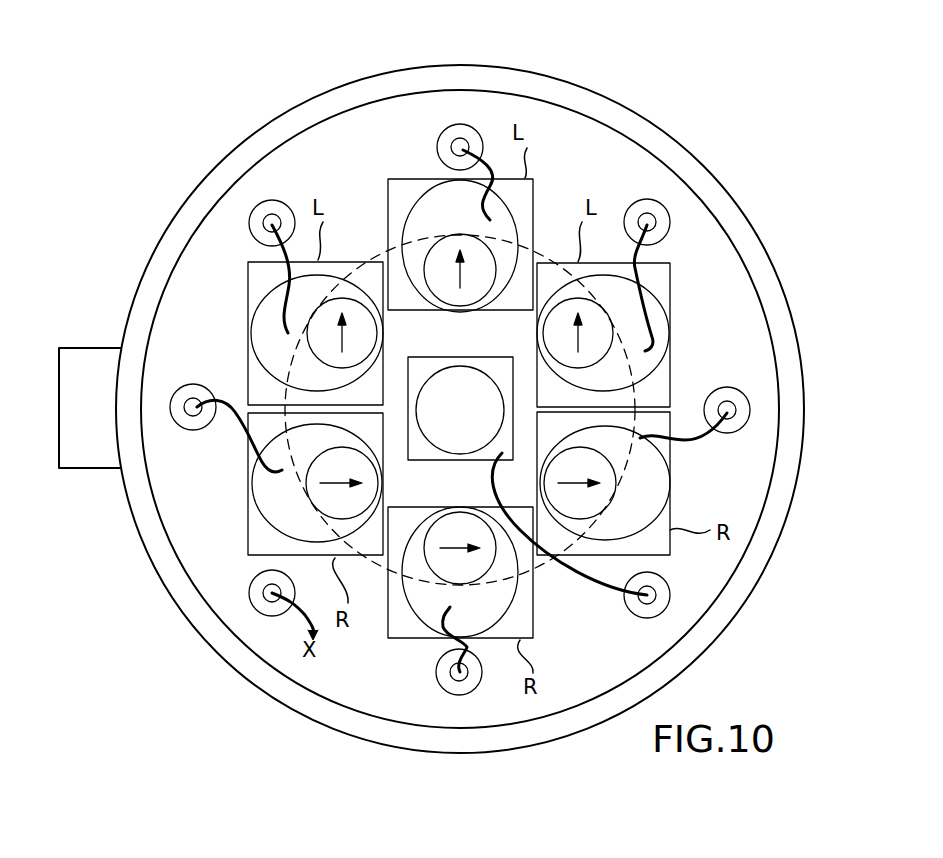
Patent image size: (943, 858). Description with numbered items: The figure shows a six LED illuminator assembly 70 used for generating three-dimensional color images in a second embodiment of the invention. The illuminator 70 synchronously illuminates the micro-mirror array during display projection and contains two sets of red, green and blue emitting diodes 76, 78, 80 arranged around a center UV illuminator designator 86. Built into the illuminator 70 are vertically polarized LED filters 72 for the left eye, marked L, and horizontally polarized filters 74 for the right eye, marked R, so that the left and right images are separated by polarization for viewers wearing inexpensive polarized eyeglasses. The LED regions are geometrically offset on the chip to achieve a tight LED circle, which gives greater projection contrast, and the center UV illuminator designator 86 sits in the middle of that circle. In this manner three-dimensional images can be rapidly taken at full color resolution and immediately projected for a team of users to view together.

The six LED illuminator assembly 70 is at (740, 200).
The vertically polarized LED filters 72 is at (533, 338).
The horizontally polarized filters 74 is at (537, 477).
The red emitting diode 76 is at (258, 297).
The green emitting diode 78 is at (424, 195).
The blue emitting diode 80 is at (663, 320).
The center UV illuminator designator 86 is at (493, 378).